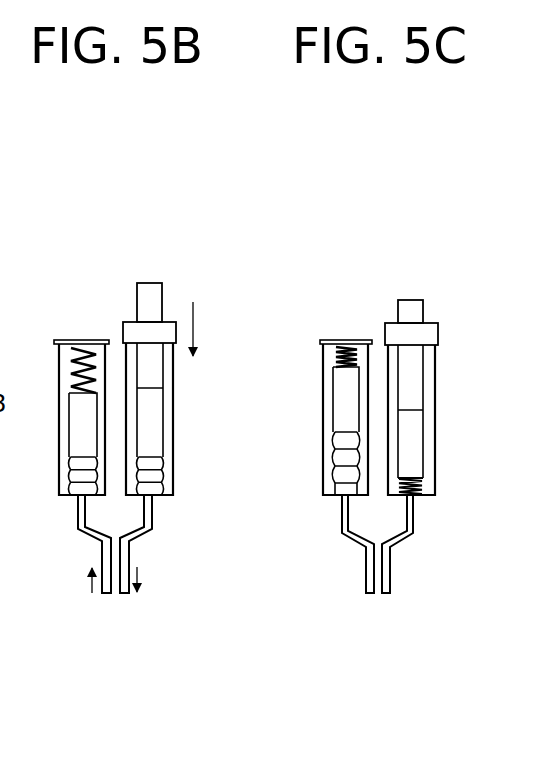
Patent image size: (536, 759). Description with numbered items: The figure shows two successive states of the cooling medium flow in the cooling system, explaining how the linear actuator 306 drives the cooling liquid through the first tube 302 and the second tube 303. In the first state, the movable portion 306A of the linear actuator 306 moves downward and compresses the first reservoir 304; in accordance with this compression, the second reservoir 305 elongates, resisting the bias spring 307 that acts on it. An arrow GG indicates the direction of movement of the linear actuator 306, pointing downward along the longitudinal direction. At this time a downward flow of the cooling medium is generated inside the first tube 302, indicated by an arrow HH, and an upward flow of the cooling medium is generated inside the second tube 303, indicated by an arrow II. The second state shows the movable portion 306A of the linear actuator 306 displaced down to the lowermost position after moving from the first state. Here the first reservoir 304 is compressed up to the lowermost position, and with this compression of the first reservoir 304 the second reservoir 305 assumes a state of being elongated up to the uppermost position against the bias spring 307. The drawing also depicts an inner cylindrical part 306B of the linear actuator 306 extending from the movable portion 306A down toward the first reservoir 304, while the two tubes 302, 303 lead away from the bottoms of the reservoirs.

In FIG. 5B, the first tube 302 is at (128, 549).
In FIG. 5C, the first tube 302 is at (387, 562).
In FIG. 5B, the second tube 303 is at (103, 548).
In FIG. 5C, the second tube 303 is at (368, 563).
In FIG. 5B, the first reservoir 304 is at (157, 480).
In FIG. 5C, the first reservoir 304 is at (423, 483).
In FIG. 5B, the second reservoir 305 is at (70, 474).
In FIG. 5C, the second reservoir 305 is at (337, 453).
In FIG. 5B, the linear actuator 306 is at (157, 367).
In FIG. 5C, the linear actuator 306 is at (414, 372).
In FIG. 5B, the movable portion 306A is at (163, 287).
In FIG. 5C, the movable portion 306A is at (422, 302).
In FIG. 5B, the inner cylinder of syringe 306B is at (155, 403).
In FIG. 5C, the inner cylinder of syringe 306B is at (413, 440).
In FIG. 5B, the bias spring 307 is at (72, 373).
In FIG. 5C, the bias spring 307 is at (337, 357).
In FIG. 5B, the arrow indicating direction of movement of the linear actuator GG is at (197, 329).
In FIG. 5B, the arrow indicating direction of flow of the cooling liquid in the first tube HH is at (135, 568).
In FIG. 5B, the arrow indicating direction of flow of the cooling liquid in the second tube II is at (90, 568).